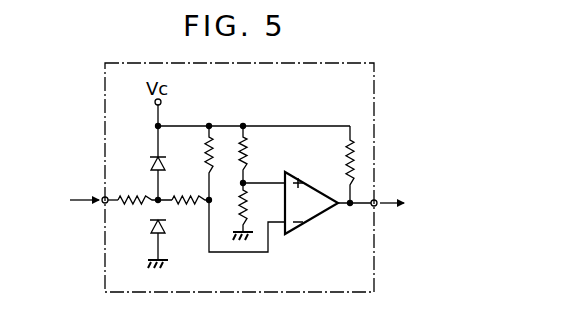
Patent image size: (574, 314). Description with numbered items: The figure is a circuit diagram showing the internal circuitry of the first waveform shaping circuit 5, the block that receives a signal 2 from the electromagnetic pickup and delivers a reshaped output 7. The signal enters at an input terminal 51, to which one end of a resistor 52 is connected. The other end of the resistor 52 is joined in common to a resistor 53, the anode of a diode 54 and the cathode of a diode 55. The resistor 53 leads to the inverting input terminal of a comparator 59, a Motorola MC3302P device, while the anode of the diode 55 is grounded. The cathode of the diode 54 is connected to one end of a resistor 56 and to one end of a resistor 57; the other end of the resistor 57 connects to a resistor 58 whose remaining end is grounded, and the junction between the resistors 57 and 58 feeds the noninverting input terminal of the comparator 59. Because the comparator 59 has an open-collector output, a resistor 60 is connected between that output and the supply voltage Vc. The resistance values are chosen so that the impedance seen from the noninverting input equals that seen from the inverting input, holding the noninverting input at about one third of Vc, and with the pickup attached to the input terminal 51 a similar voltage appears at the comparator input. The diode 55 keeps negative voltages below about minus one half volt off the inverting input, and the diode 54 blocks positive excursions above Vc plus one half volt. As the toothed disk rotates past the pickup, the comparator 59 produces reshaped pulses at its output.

The first waveform shaping circuit 5 is at (374, 112).
The input signal 2 is at (77, 200).
The output signal 7 is at (398, 203).
The input terminal 51 is at (103, 204).
The resistor 52 is at (150, 196).
The resistor 53 is at (190, 204).
The diode 54 is at (151, 164).
The diode 55 is at (151, 225).
The resistor 56 is at (204, 162).
The resistor 57 is at (262, 152).
The resistor 58 is at (240, 212).
The comparator 59 is at (316, 219).
The resistor 60 is at (346, 163).